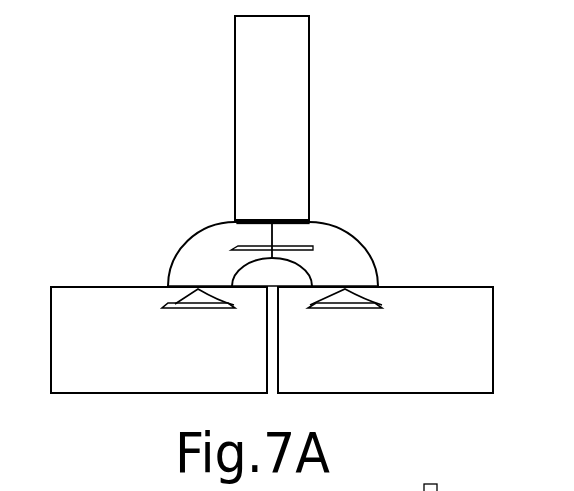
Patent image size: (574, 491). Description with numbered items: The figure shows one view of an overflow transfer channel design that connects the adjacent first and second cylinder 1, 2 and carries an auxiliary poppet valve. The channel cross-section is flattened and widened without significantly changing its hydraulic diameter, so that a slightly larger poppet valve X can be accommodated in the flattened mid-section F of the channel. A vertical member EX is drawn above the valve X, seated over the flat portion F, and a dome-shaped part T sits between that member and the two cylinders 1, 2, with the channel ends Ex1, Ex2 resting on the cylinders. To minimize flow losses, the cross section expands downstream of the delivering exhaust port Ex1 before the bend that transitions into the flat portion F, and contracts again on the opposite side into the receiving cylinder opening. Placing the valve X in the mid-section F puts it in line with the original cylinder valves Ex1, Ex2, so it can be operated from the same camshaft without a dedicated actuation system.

The electrode rod EX is at (235, 105).
The tip / dome portion T is at (203, 252).
The flattened mid-section of the transfer channel F is at (258, 229).
The auxiliary poppet valve X is at (314, 246).
The exhaust port Ex1 is at (378, 305).
The cylinder valve Ex2 is at (230, 307).
The first cylinder 1 is at (135, 378).
The second cylinder 2 is at (468, 373).